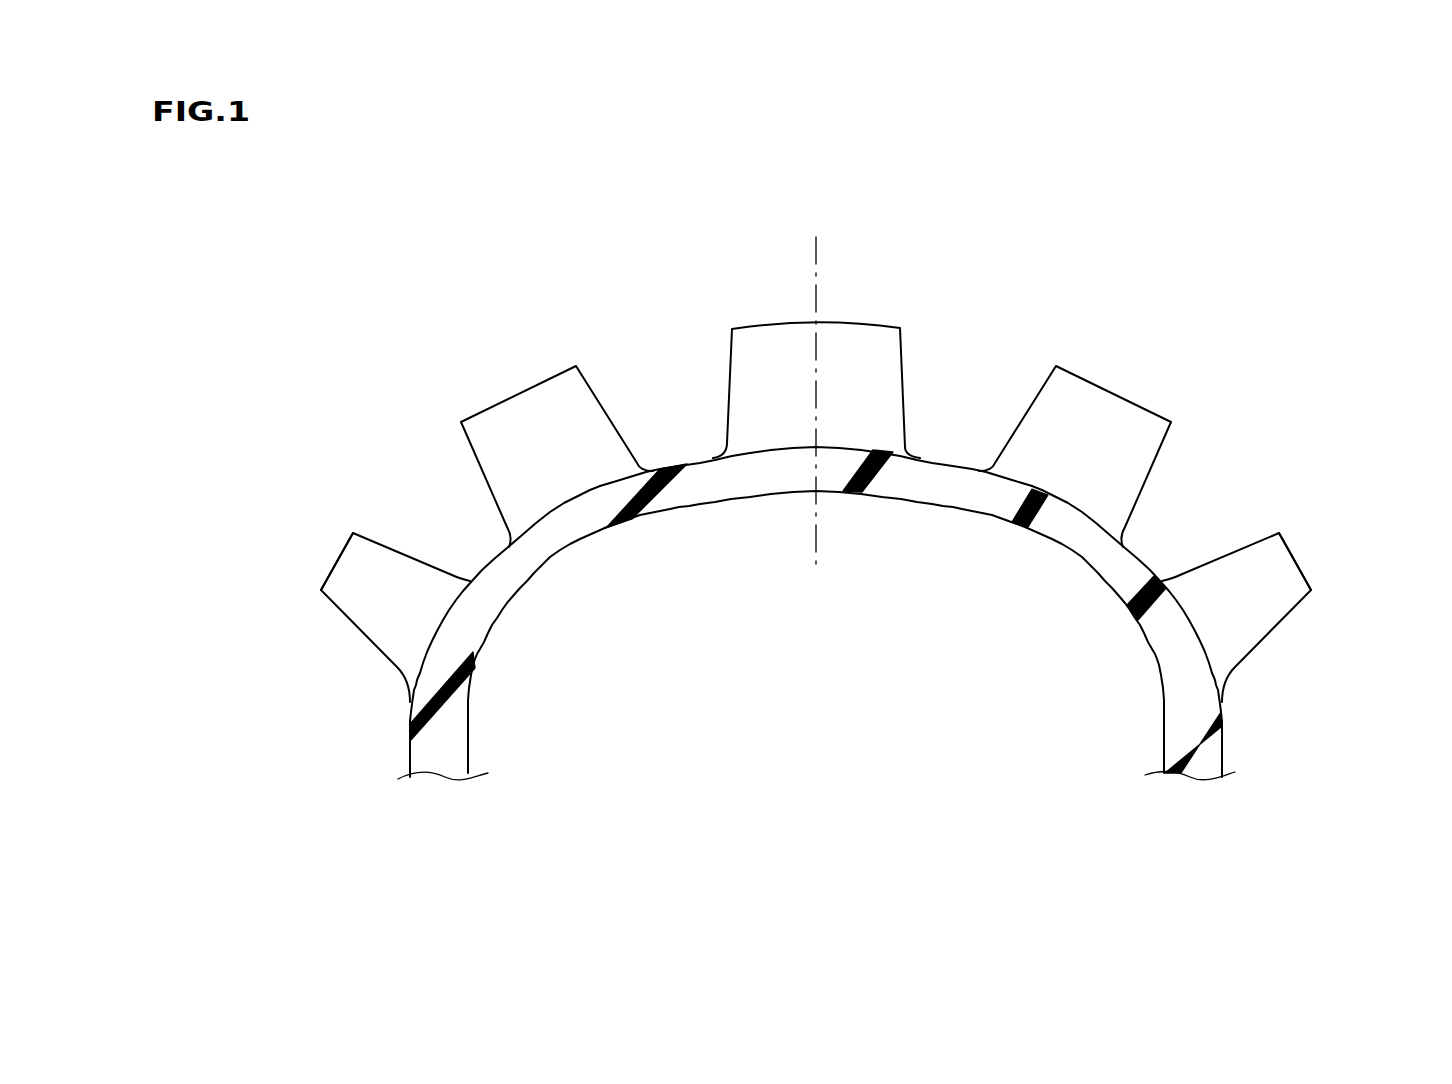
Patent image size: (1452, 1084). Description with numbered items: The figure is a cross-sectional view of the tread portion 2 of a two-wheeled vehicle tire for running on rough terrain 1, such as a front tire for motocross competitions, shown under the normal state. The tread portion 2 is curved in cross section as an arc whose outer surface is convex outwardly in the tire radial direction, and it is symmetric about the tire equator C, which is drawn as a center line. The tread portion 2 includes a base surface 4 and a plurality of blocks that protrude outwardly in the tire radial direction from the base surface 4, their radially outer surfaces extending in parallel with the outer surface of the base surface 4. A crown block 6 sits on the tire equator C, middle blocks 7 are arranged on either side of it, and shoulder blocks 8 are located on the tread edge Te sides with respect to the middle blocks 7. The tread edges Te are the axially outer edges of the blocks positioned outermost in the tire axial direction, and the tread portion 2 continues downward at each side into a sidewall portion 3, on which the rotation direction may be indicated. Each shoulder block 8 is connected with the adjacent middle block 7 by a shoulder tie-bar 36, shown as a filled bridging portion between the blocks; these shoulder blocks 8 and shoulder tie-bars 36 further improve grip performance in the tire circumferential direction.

The two-wheeled vehicle tire for running on rough terrain 1 is at (820, 494).
The tread portion 2 is at (820, 498).
The sidewall portion 3 is at (384, 747).
The base surface 4 is at (697, 446).
The crown block 6 is at (861, 321).
The middle block 7 is at (515, 392).
The shoulder block 8 is at (336, 560).
The shoulder tie-bar 36 is at (482, 552).
The tire equator C is at (816, 389).
The tread edge Te is at (320, 590).